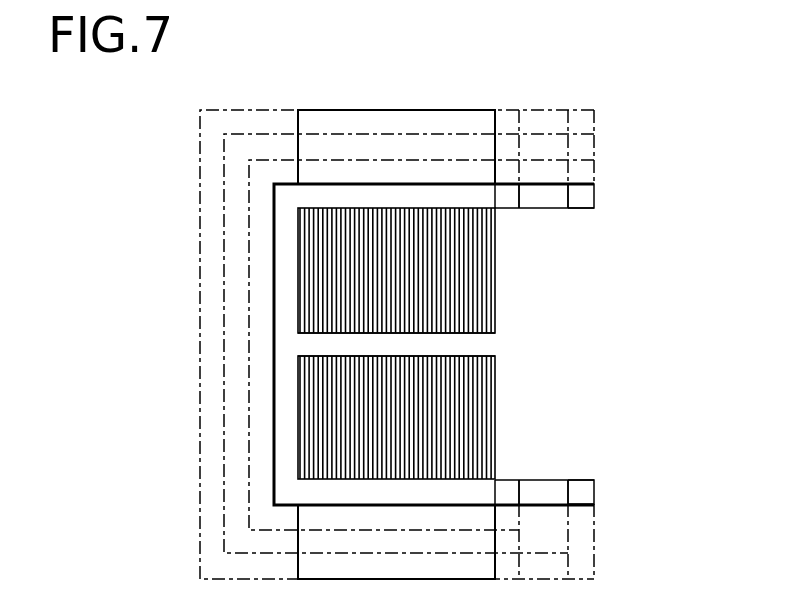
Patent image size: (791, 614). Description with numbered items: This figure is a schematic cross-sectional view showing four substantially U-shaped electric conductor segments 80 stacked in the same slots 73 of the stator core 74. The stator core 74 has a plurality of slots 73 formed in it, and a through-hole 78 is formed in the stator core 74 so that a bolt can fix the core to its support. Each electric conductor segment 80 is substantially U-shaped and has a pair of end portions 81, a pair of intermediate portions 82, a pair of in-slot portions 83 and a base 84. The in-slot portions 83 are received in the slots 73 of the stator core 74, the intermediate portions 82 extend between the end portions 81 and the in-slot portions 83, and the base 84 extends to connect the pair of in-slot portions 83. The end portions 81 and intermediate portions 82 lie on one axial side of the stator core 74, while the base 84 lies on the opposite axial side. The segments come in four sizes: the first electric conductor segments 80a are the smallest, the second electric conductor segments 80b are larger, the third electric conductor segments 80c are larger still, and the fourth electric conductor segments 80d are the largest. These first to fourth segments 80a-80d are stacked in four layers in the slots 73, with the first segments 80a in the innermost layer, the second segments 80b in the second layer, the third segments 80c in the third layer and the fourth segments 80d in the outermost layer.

The stator core 74 is at (388, 120).
The base 84 is at (288, 307).
The in-slot portions 83 is at (391, 495).
The through-hole 78 is at (473, 356).
The slots 73 is at (477, 208).
The intermediate portions 82 is at (544, 197).
The end portions 81 is at (582, 198).
The electric conductor segments 80 is at (490, 344).
The first electric conductor segments 80a is at (587, 195).
The second electric conductor segments 80b is at (584, 173).
The third electric conductor segments 80c is at (584, 151).
The fourth electric conductor segments 80d is at (584, 125).